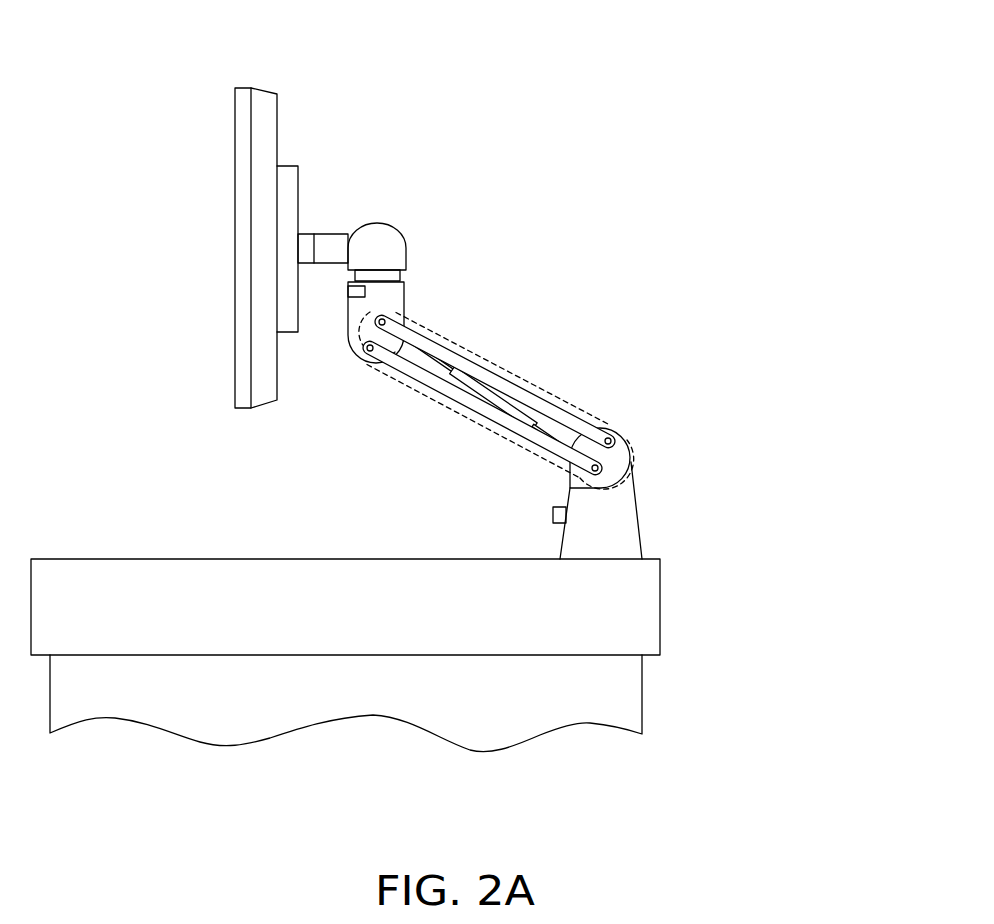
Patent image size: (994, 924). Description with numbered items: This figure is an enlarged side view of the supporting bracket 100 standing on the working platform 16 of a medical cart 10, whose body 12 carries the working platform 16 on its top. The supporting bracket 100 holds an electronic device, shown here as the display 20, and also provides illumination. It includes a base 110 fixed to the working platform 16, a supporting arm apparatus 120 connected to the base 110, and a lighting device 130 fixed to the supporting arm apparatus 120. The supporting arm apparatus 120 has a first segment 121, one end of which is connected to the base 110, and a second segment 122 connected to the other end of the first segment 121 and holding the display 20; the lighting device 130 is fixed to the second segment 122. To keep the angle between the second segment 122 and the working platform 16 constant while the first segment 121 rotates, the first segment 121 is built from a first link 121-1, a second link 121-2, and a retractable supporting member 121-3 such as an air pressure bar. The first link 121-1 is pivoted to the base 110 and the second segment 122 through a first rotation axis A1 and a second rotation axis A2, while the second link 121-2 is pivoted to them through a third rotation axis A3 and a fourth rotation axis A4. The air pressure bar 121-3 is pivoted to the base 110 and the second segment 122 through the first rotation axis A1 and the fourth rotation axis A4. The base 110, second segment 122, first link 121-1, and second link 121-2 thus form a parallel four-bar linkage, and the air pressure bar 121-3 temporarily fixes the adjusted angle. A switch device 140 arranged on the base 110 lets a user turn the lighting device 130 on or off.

The medical cart 10 is at (820, 120).
The display 20 is at (262, 96).
The body 12 is at (615, 689).
The working platform 16 is at (628, 608).
The supporting bracket 100 is at (740, 192).
The base 110 is at (623, 512).
The supporting arm apparatus 120 is at (640, 110).
The first segment 121 is at (555, 285).
The first link 121-1 is at (447, 392).
The second link 121-2 is at (500, 385).
The retractable supporting member 121-3 is at (532, 415).
The second segment 122 is at (437, 182).
The lighting device 130 is at (352, 302).
The switch device 140 is at (553, 513).
The first rotation axis A1 is at (585, 478).
The second rotation axis A2 is at (371, 352).
The third rotation axis A3 is at (610, 436).
The fourth rotation axis A4 is at (385, 322).